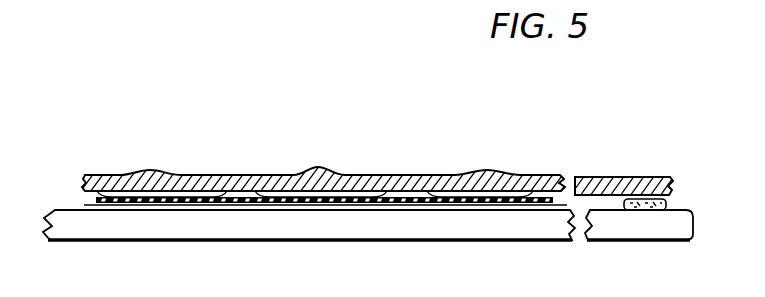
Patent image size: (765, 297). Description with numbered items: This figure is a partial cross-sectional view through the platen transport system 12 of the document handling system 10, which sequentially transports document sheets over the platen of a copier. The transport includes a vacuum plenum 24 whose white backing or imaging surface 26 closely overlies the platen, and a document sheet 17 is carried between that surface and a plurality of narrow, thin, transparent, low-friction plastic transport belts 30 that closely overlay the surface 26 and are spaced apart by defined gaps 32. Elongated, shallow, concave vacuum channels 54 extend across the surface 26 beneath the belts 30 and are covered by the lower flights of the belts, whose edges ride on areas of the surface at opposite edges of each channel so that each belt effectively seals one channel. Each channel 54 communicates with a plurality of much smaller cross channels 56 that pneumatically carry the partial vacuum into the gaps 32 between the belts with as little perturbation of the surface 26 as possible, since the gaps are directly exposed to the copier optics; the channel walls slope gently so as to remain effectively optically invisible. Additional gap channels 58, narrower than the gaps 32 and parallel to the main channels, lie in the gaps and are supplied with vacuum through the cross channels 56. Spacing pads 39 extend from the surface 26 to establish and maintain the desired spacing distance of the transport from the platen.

The document handling system 10 is at (333, 150).
The platen transport system 12 is at (476, 152).
The document sheet 17 is at (405, 211).
The vacuum plenum 24 is at (368, 176).
The imaging surface 26 is at (418, 176).
The transport belts 30 is at (113, 206).
The gaps 32 is at (226, 203).
The spacing pads 39 is at (668, 206).
The vacuum channels 54 is at (162, 176).
The cross channels 56 is at (220, 177).
The gap channels 58 is at (248, 177).